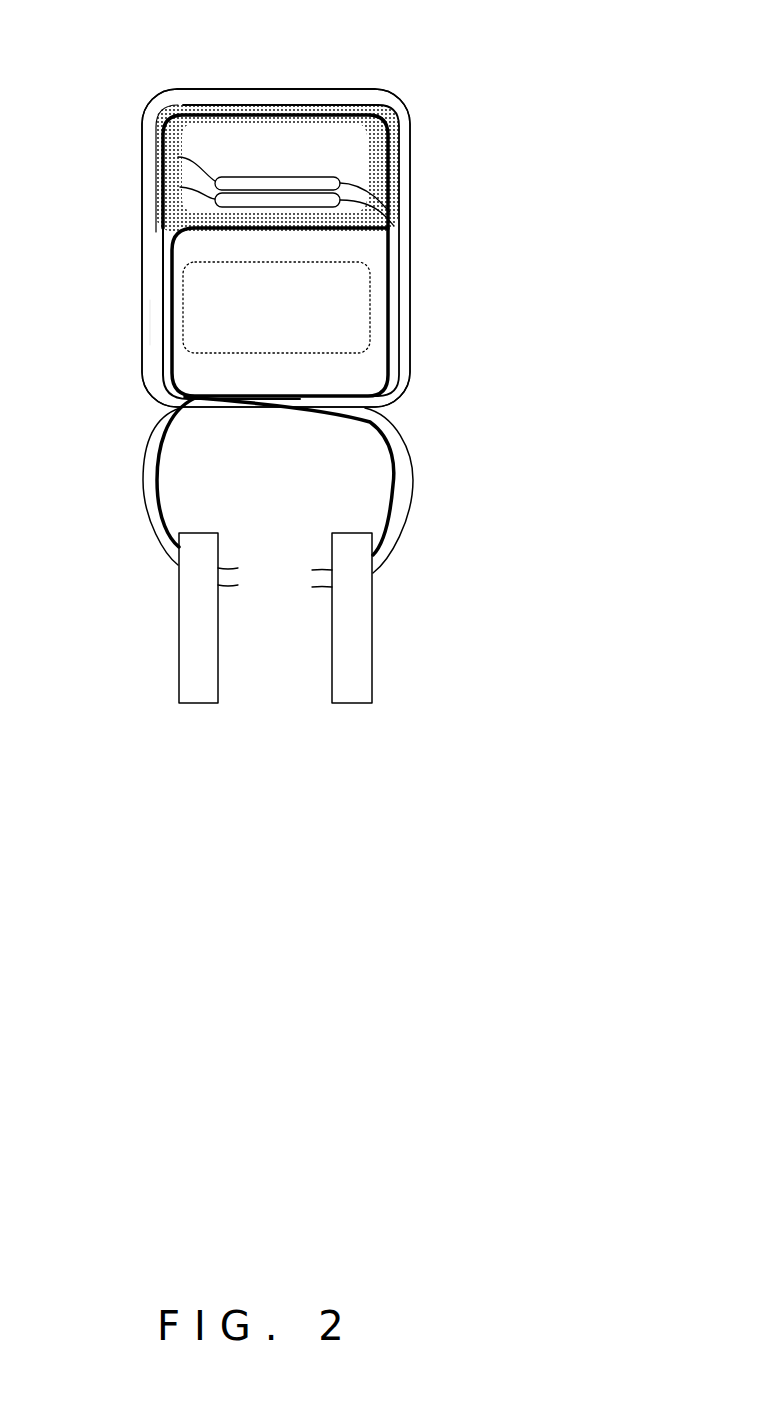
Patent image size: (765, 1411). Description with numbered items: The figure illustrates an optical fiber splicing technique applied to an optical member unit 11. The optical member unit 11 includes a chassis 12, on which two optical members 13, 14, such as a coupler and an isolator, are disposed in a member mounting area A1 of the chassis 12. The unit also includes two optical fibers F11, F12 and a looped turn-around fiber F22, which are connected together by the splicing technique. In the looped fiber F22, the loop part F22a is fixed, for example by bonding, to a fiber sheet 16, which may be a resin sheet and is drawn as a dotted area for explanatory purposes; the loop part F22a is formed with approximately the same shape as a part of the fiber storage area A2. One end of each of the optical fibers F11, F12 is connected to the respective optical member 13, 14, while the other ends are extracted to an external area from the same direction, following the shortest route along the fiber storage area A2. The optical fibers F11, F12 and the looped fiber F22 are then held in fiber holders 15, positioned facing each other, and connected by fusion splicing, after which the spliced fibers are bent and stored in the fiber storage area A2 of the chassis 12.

The optical member unit 11 is at (424, 87).
The chassis 12 is at (211, 88).
The optical member 13 is at (168, 162).
The optical member 14 is at (167, 195).
The fiber holder 15 is at (352, 697).
The fiber sheet 16 is at (382, 111).
The member mounting area A1 is at (193, 280).
The fiber storage area A2 is at (150, 345).
The optical fiber F11 is at (401, 287).
The optical fiber F12 is at (388, 320).
The looped turn-around fiber F22 is at (413, 493).
The loop part F22a is at (392, 165).